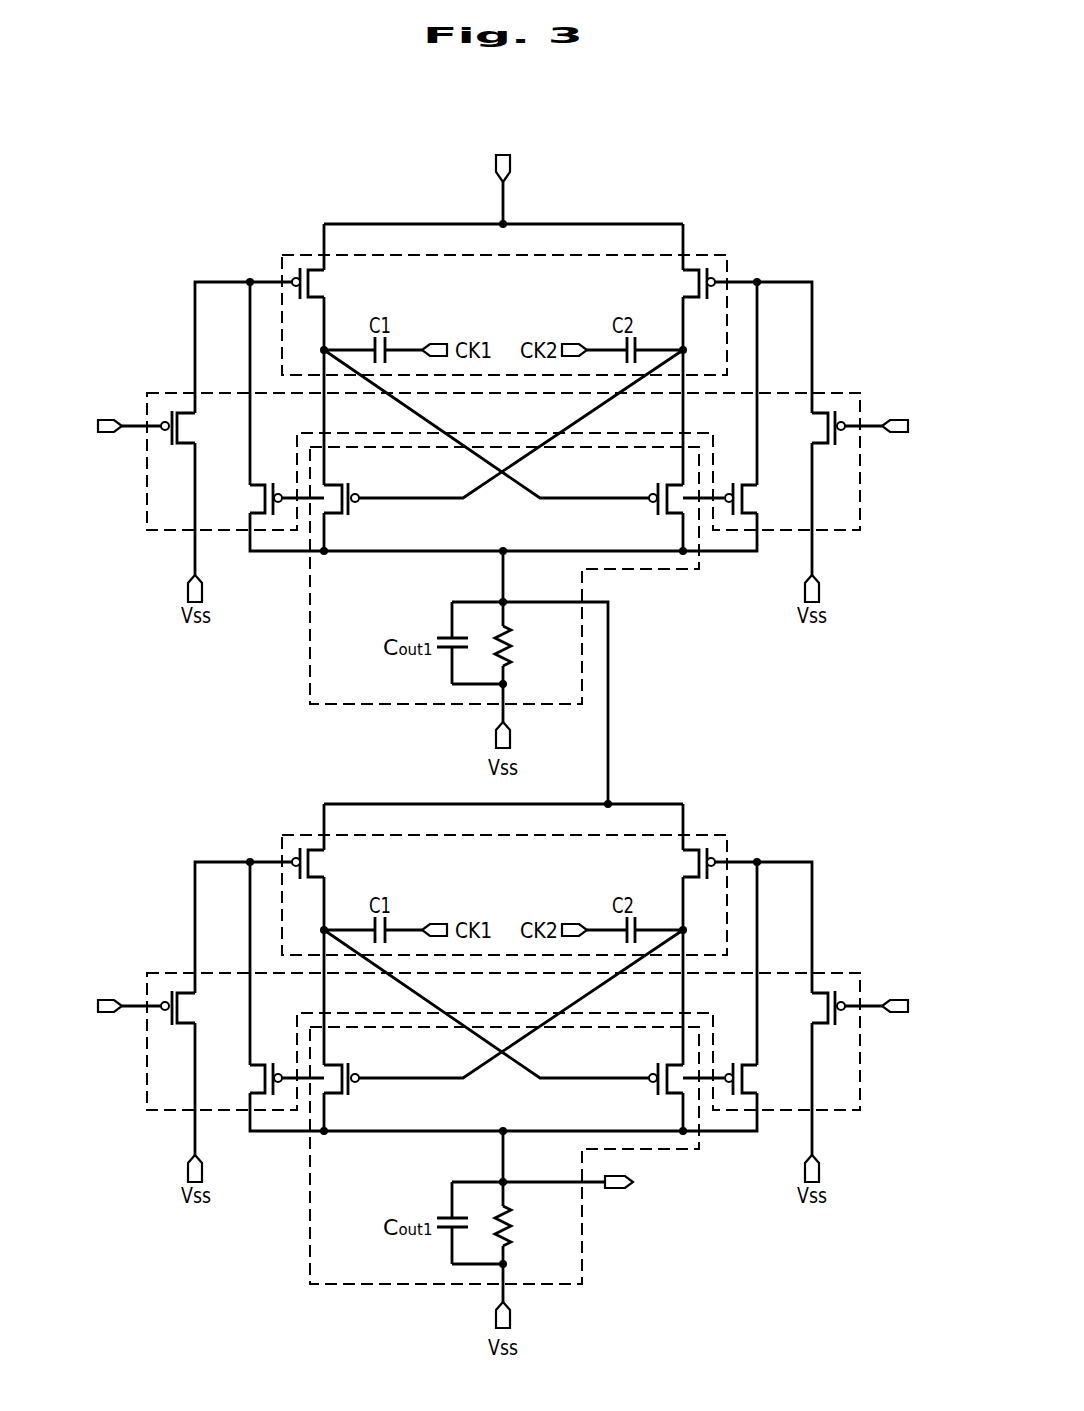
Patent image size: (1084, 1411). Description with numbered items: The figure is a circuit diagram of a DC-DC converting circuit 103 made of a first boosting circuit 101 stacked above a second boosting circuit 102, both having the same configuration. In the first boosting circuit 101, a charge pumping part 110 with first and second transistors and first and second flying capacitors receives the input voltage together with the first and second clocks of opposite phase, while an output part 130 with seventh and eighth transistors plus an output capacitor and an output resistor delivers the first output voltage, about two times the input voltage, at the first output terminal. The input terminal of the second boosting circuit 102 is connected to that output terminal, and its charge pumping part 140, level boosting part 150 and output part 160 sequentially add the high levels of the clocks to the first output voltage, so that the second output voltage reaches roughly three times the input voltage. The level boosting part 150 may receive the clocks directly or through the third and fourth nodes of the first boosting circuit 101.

The first boosting circuit 101 is at (769, 229).
The second boosting circuit 102 is at (504, 1046).
The DC-DC converting circuit 103 is at (668, 141).
The charge pumping part 110 is at (702, 255).
The output part 130 is at (309, 681).
The charge pumping part 140 is at (521, 854).
The level boosting part 150 is at (516, 1001).
The output part 160 is at (504, 1155).